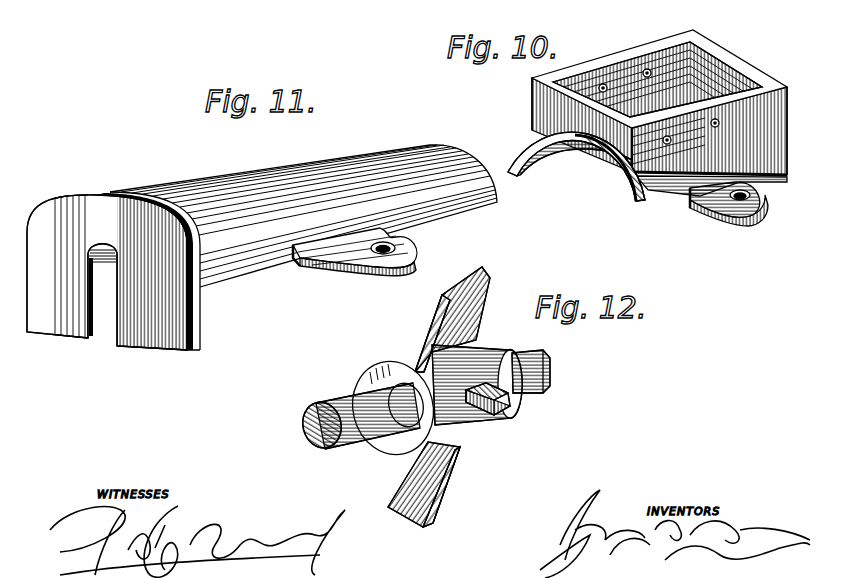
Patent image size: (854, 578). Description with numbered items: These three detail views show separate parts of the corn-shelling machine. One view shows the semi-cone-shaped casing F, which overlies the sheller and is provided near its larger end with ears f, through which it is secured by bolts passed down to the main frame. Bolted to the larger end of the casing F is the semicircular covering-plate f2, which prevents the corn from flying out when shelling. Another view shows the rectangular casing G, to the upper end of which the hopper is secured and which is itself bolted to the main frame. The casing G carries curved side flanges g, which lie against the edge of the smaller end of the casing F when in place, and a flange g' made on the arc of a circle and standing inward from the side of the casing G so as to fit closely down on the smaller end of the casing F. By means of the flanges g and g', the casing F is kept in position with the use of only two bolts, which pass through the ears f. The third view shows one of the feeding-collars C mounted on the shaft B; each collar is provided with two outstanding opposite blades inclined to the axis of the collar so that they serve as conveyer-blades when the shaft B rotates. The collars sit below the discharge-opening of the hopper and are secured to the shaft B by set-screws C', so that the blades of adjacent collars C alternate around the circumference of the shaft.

In FIG. 11, the semi-cone-shaped casing F is at (262, 247).
In FIG. 11, the ears f is at (367, 252).
In FIG. 10, the ears f is at (729, 218).
In FIG. 11, the semicircular covering-plate f2 is at (124, 315).
In FIG. 10, the rectangular casing G is at (659, 98).
In FIG. 10, the curved side flanges g is at (612, 163).
In FIG. 10, the flange g' is at (574, 165).
In FIG. 12, the shaft B is at (424, 404).
In FIG. 12, the feeding-collars C is at (453, 397).
In FIG. 12, the set-screws C' is at (517, 410).